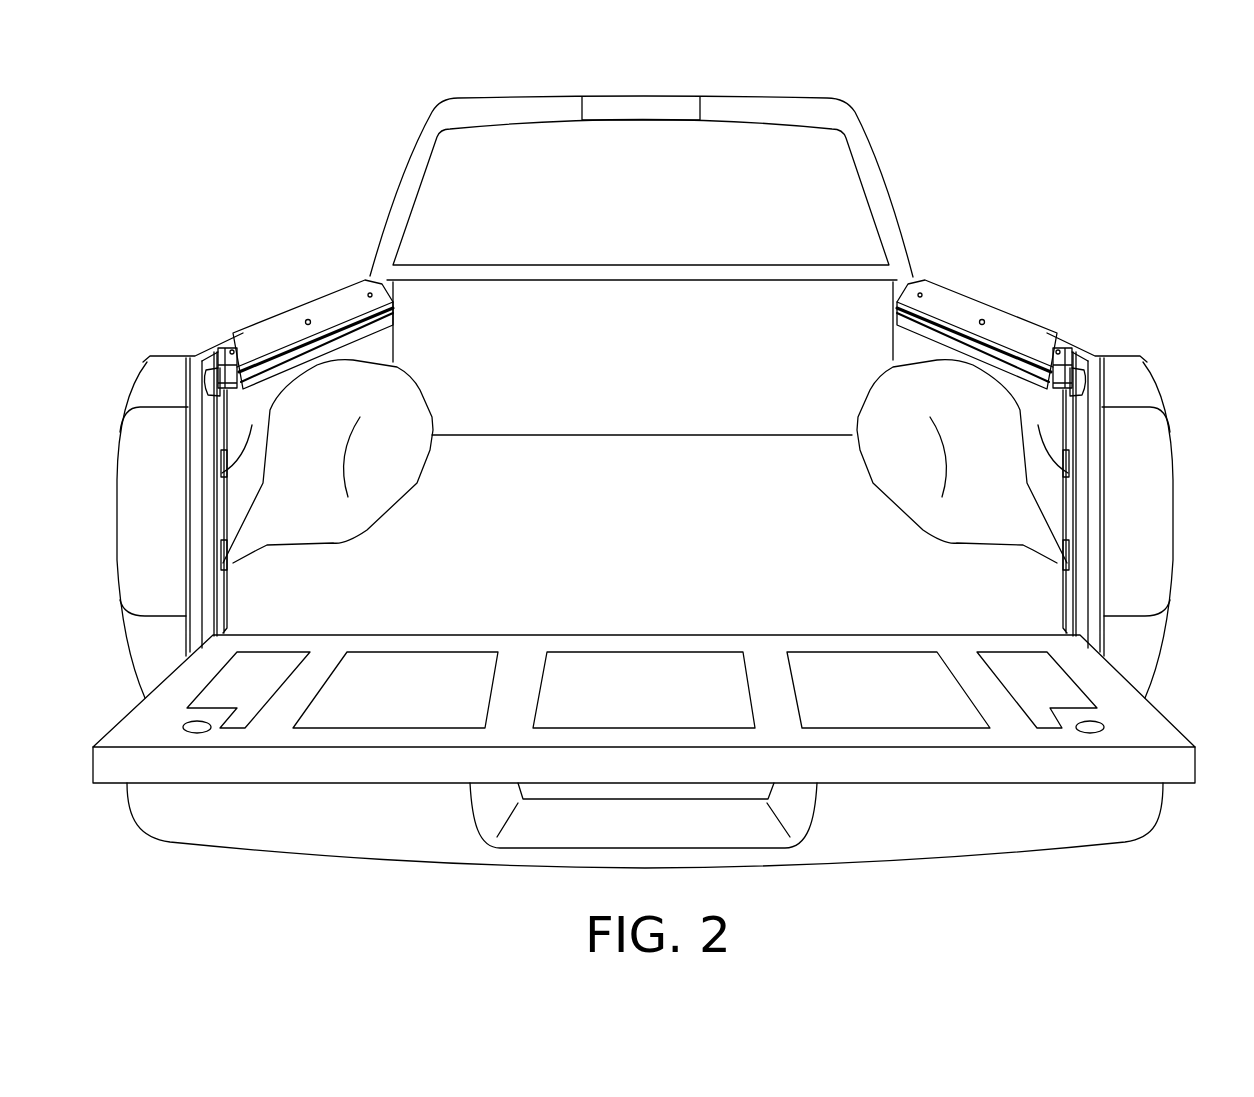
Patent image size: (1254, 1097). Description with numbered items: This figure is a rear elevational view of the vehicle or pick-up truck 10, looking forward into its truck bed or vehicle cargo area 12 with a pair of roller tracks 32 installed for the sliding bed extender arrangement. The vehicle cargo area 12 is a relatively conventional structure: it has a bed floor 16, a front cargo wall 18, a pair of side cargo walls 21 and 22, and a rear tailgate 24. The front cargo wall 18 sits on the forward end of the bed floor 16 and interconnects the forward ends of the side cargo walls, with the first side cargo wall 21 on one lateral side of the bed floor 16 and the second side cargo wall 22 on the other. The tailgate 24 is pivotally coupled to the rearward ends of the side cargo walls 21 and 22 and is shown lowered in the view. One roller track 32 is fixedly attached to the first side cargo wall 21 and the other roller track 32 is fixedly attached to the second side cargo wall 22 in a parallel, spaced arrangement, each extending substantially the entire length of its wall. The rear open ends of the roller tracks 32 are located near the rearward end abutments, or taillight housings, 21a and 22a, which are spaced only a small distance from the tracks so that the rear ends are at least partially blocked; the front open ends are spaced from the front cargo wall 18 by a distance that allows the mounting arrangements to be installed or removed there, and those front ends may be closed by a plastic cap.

The vehicle or pick-up truck 10 is at (1043, 176).
The vehicle cargo area 12 is at (804, 351).
The bed floor 16 is at (721, 530).
The front cargo wall 18 is at (567, 384).
The first side cargo wall 21 is at (227, 472).
The rearward end abutment 21a is at (233, 347).
The second side cargo wall 22 is at (1062, 472).
The rearward end abutment 22a is at (1055, 347).
The rear tailgate 24 is at (1143, 730).
The roller track 32 is at (341, 318).